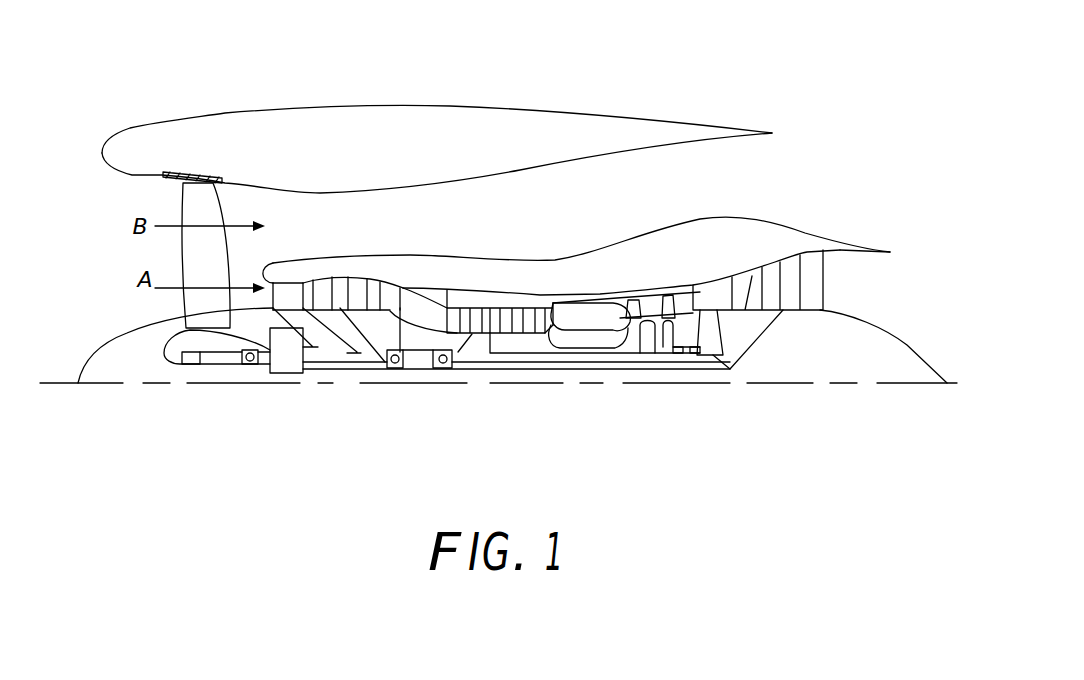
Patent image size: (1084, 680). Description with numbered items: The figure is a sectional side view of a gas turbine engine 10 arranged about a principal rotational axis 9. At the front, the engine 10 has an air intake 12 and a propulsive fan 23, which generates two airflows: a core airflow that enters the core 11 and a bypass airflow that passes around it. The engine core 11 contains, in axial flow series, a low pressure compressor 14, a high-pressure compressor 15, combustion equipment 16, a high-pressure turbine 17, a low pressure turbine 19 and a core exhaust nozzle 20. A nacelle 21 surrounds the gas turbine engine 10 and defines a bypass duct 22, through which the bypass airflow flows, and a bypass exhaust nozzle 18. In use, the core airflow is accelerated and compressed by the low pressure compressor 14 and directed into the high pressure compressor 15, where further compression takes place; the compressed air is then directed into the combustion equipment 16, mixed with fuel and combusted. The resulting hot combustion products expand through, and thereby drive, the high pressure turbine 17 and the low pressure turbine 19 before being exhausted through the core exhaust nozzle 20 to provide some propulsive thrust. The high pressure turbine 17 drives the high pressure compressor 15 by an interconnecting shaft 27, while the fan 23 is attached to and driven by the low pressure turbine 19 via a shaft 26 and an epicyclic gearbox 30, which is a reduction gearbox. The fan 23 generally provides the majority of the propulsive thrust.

The principal rotational axis 9 is at (828, 388).
The gas turbine engine 10 is at (179, 120).
The core 11 is at (559, 278).
The air intake 12 is at (116, 194).
The low pressure compressor 14 is at (357, 287).
The high-pressure compressor 15 is at (513, 318).
The combustion equipment 16 is at (585, 318).
The high-pressure turbine 17 is at (650, 301).
The bypass exhaust nozzle 18 is at (772, 167).
The low pressure turbine 19 is at (795, 268).
The core exhaust nozzle 20 is at (870, 286).
The nacelle 21 is at (417, 118).
The bypass duct 22 is at (688, 191).
The propulsive fan 23 is at (187, 253).
The shaft 26 is at (502, 372).
The interconnecting shaft 27 is at (546, 357).
The epicyclic gearbox 30 is at (285, 362).